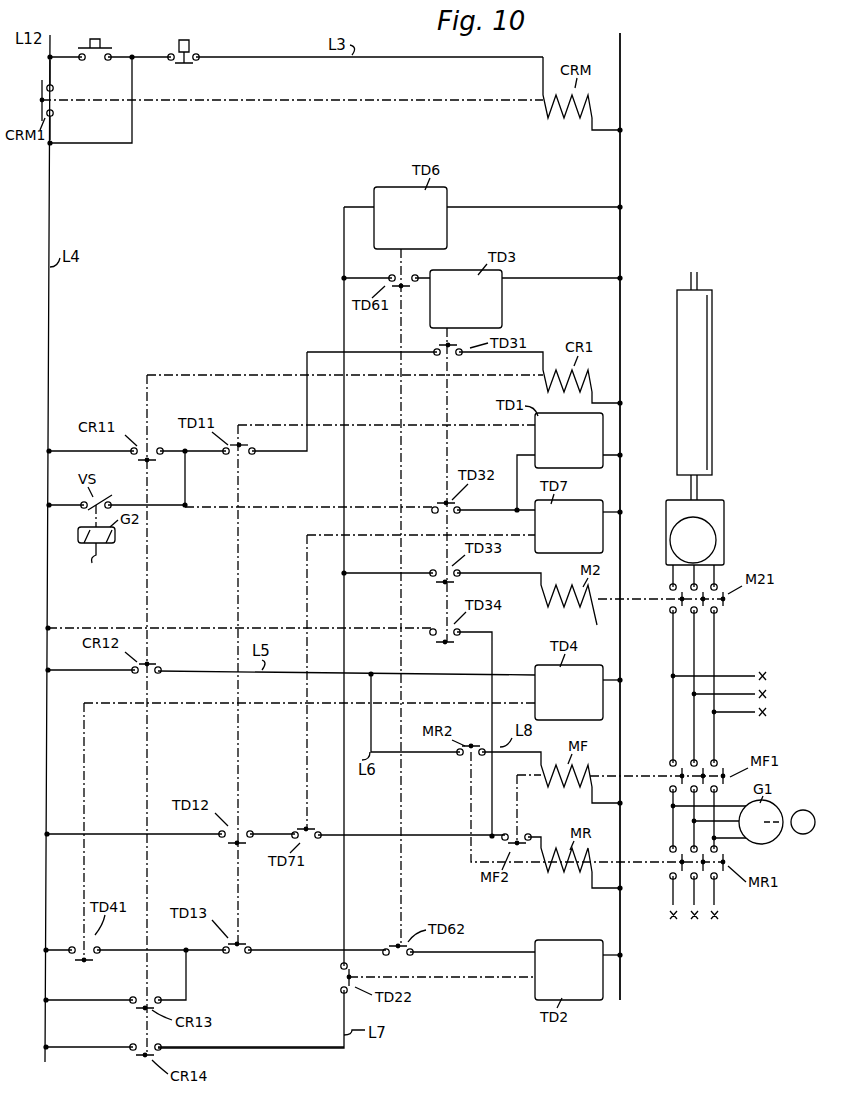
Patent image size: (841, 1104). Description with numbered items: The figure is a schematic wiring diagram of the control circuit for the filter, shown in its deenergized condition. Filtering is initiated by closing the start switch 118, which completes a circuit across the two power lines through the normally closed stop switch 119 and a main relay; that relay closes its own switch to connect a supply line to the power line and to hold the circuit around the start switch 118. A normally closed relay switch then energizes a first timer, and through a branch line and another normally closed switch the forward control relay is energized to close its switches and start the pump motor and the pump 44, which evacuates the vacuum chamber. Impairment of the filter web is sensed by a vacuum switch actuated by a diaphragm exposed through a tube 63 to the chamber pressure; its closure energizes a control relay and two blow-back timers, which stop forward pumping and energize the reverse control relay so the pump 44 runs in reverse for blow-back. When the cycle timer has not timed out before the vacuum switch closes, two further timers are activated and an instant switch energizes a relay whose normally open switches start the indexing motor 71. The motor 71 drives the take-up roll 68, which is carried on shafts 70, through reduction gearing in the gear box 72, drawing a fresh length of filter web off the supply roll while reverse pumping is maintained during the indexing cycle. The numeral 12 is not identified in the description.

The start switch 118 is at (111, 53).
The stop switch 119 is at (192, 51).
The power supply line L2 12 is at (626, 60).
The shafts 70 is at (700, 284).
The take-up roll 68 is at (712, 427).
The gear box 72 is at (724, 516).
The electric motor 71 is at (716, 540).
The tube 63 is at (90, 556).
The pump 44 is at (804, 834).